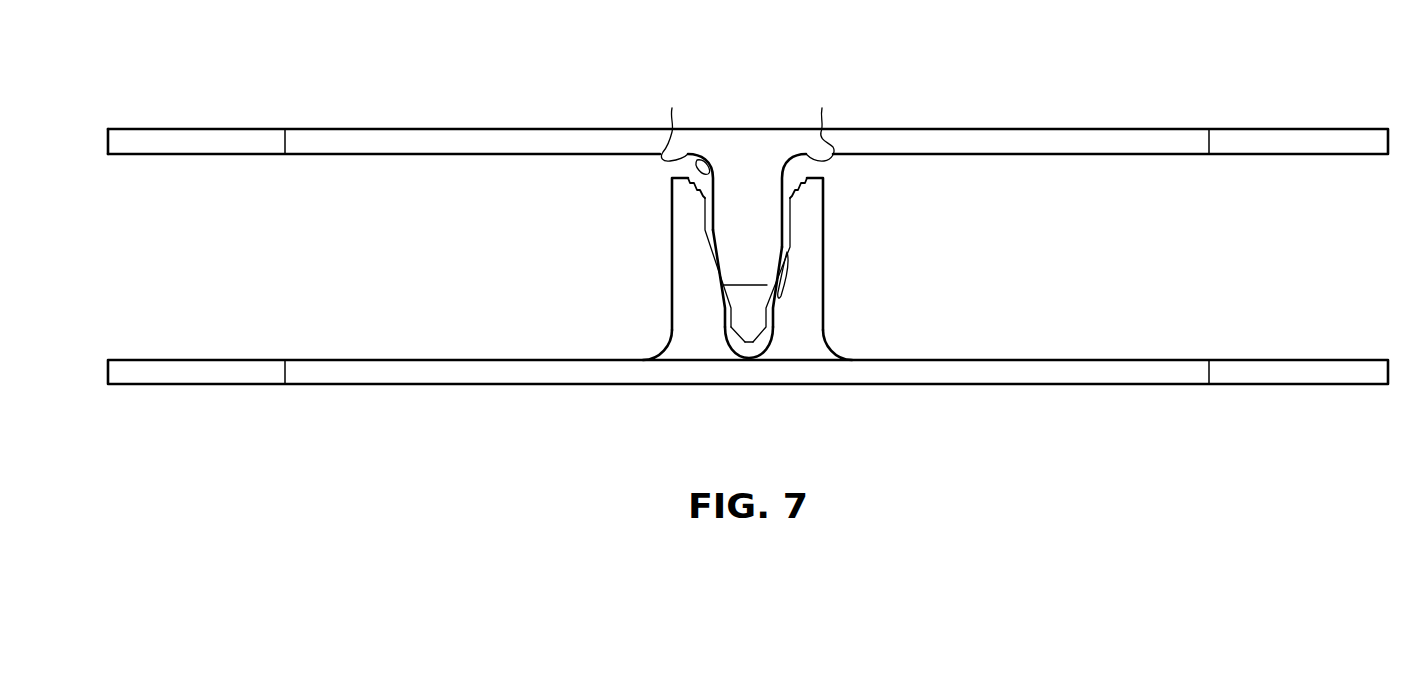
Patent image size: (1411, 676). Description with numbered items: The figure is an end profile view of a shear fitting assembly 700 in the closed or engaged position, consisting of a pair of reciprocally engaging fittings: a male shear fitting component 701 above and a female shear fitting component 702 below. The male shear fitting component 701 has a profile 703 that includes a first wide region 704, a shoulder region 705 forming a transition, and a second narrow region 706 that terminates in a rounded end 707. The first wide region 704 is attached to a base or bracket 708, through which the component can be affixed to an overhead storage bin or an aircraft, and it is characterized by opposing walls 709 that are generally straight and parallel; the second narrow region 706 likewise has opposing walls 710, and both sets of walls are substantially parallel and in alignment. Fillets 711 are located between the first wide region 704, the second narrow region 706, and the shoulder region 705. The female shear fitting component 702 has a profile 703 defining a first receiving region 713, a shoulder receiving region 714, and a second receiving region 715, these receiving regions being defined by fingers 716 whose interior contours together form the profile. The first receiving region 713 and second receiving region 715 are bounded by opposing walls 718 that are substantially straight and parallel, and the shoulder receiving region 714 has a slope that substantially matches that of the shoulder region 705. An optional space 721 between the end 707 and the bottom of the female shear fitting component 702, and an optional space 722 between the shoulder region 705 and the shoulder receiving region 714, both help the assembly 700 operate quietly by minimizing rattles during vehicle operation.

The shear fitting assembly 700 is at (491, 95).
The male shear fitting component 701 is at (1005, 128).
The female shear fitting component 702 is at (1007, 387).
The profile 703 is at (704, 161).
The first wide region 704 is at (788, 233).
The shoulder region 705 is at (772, 302).
The second narrow region 706 is at (773, 322).
The end 707 is at (748, 342).
The base or bracket 708 is at (197, 155).
The opposing walls 709 is at (700, 197).
The opposing walls 710 is at (723, 322).
The fillets 711 is at (747, 120).
The first receiving region 713 is at (788, 253).
The shoulder receiving region 714 is at (722, 303).
The second receiving region 715 is at (756, 353).
The fingers 716 is at (677, 248).
The opposing walls 718 is at (788, 270).
The space 721 is at (727, 345).
The space 722 is at (708, 282).